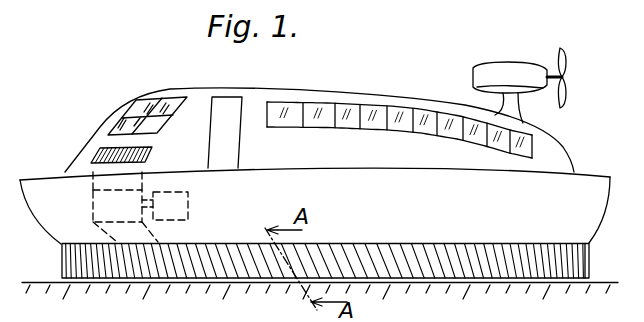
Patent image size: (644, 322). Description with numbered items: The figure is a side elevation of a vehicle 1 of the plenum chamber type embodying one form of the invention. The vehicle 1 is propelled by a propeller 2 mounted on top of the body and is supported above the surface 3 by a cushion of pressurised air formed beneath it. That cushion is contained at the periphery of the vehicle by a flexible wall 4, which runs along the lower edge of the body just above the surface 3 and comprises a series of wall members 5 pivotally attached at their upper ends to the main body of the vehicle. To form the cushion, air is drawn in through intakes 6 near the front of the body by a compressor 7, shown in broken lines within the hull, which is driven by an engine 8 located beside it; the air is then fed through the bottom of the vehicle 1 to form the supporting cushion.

The vehicle 1 is at (332, 90).
The propeller 2 is at (568, 47).
The surface 3 is at (606, 283).
The flexible wall 4 is at (67, 260).
The wall members 5 is at (447, 265).
The intakes 6 is at (98, 153).
The compressor 7 is at (102, 202).
The engine 8 is at (183, 205).